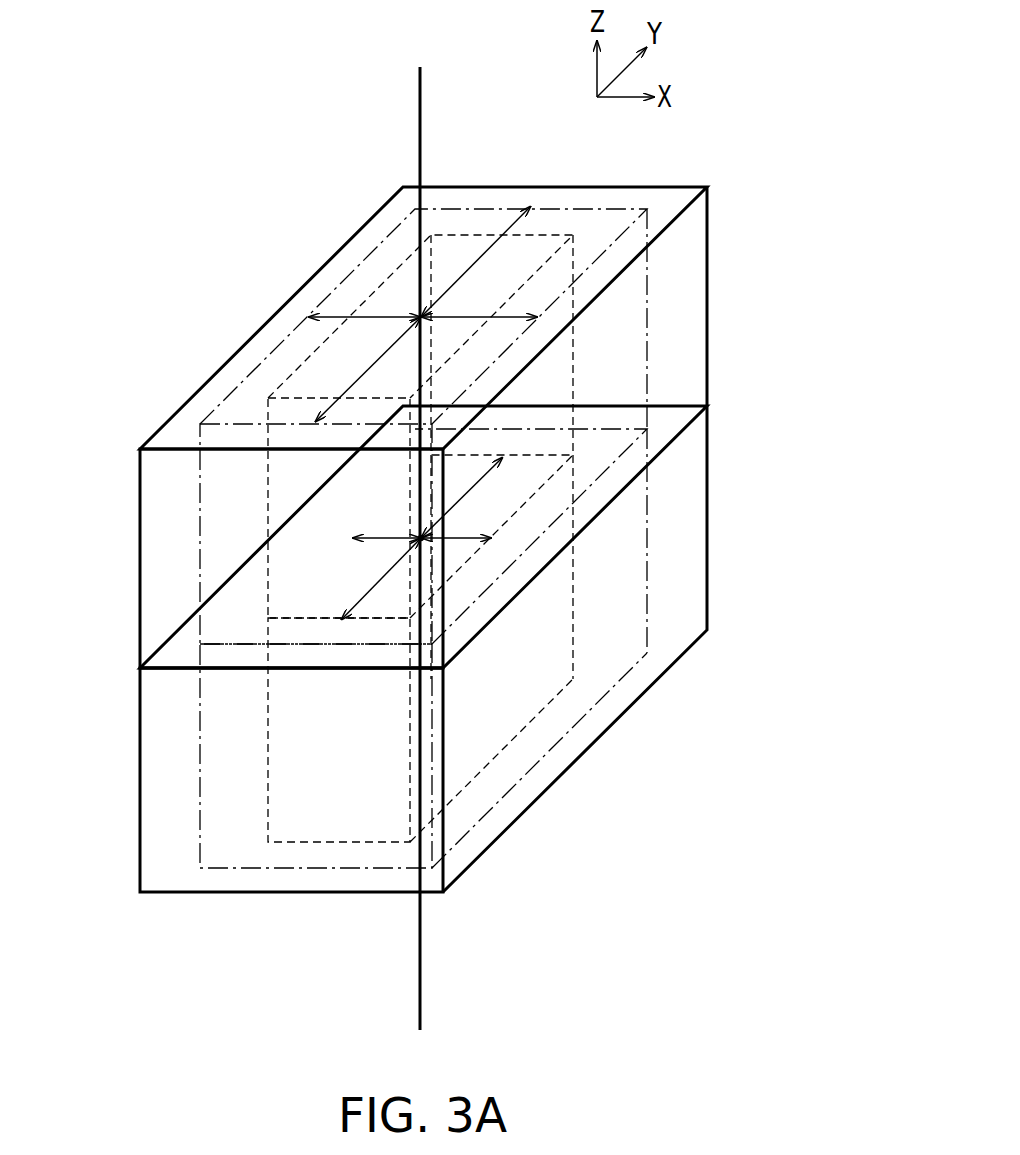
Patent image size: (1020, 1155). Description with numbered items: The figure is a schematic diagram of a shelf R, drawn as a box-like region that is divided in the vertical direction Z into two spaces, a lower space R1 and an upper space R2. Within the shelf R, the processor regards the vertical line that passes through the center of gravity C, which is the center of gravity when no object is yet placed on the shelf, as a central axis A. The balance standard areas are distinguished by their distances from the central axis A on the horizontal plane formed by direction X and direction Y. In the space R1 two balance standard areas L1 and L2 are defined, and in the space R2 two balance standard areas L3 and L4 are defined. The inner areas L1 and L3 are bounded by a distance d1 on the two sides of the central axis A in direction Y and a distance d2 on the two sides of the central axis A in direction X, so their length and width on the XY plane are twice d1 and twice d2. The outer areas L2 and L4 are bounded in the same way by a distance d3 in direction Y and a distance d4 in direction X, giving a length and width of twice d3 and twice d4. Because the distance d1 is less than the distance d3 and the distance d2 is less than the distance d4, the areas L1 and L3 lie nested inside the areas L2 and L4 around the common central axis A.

The central axis A is at (418, 531).
The shelf R is at (465, 507).
The space R1 is at (707, 508).
The space R2 is at (274, 318).
The balance standard area L1 is at (268, 707).
The balance standard area L2 is at (200, 787).
The balance standard area L3 is at (573, 367).
The balance standard area L4 is at (647, 282).
The center of gravity C is at (421, 538).
The distance d1 is at (422, 538).
The distance d2 is at (422, 524).
The distance d3 is at (423, 314).
The distance d4 is at (423, 304).